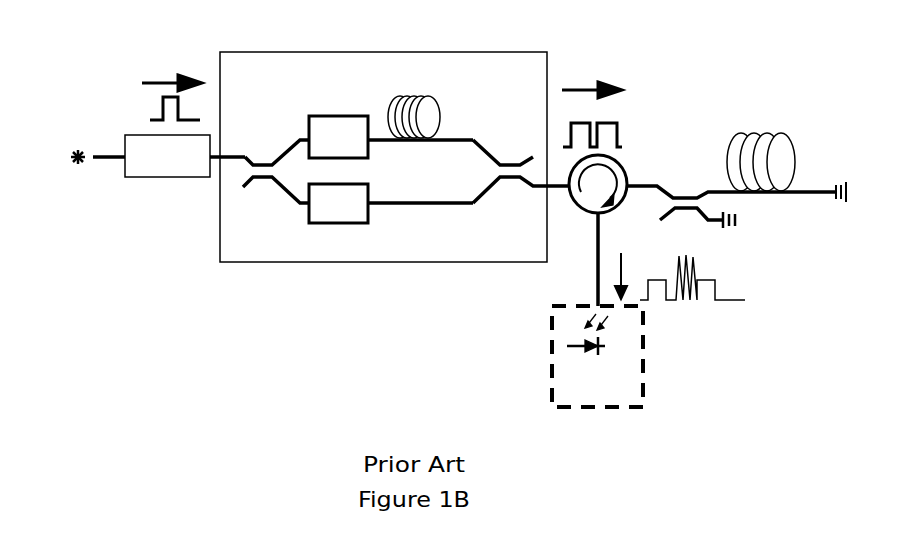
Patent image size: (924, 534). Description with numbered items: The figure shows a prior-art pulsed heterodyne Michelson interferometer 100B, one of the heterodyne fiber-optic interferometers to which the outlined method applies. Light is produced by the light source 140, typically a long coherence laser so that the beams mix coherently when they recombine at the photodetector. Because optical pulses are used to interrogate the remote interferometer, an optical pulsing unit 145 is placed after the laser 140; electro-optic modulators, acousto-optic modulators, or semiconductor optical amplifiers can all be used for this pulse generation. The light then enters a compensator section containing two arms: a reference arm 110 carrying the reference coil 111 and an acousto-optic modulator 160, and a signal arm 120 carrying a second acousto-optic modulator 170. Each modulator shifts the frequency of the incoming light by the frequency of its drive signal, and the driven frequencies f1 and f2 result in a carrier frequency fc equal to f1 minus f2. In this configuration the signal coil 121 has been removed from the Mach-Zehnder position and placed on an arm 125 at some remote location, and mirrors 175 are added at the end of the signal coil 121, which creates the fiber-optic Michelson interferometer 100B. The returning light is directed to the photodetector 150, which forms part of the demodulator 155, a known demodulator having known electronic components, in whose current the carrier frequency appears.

The pulsed heterodyne Michelson interferometer 100B is at (460, 217).
The light source 140 is at (80, 165).
The optical pulsing unit 145 is at (185, 177).
The acousto-optic modulator 160 is at (322, 116).
The acousto-optic modulator 170 is at (355, 224).
The reference coil 111 is at (440, 113).
The reference arm 110 is at (492, 156).
The signal arm 120 is at (445, 201).
The signal coil 121 is at (790, 139).
The arm 125 is at (797, 194).
The mirrors 175 is at (846, 188).
The photodetector 150 is at (605, 347).
The demodulator 155 is at (632, 398).